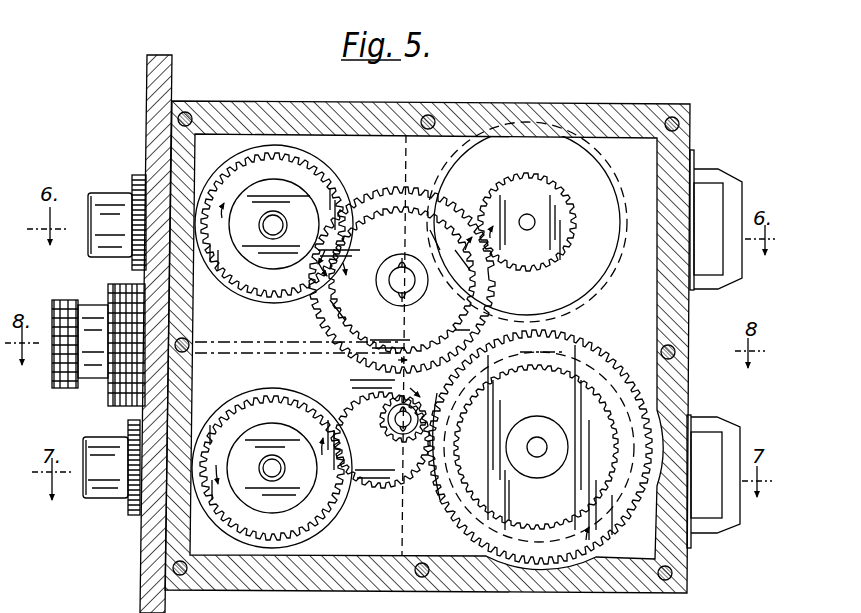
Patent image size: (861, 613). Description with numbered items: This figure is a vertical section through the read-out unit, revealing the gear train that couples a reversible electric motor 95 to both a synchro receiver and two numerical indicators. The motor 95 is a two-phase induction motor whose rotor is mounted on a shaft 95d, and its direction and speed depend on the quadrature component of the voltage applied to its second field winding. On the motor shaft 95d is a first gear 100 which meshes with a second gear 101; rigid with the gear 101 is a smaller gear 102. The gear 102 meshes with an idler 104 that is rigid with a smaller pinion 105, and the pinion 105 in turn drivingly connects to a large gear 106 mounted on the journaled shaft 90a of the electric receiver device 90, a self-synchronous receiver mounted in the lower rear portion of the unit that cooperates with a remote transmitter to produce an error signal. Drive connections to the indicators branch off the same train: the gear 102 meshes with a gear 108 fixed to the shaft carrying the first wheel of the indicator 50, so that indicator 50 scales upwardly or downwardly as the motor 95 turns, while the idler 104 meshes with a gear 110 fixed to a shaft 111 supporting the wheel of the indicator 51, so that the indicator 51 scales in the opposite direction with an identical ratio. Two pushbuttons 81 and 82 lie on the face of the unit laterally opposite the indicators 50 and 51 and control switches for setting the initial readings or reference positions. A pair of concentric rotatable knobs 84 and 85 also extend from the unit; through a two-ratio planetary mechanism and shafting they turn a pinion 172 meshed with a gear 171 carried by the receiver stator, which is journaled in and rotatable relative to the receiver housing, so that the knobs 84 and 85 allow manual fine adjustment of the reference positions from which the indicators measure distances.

The indicator 50 is at (247, 170).
The indicator 51 is at (239, 472).
The pushbutton 81 is at (113, 206).
The pushbutton 82 is at (101, 490).
The rotatable knob 84 is at (53, 386).
The rotatable knob 85 is at (108, 404).
The electric receiver device 90 is at (592, 538).
The journaled shaft 90a is at (537, 450).
The reversible electric motor 95 is at (602, 154).
The shaft 95d is at (527, 214).
The first gear 100 is at (528, 270).
The second gear 101 is at (492, 298).
The smaller gear 102 is at (317, 318).
The idler 104 is at (337, 382).
The pinion 105 is at (387, 437).
The large gear 106 is at (437, 501).
The gear 108 is at (340, 196).
The gear 110 is at (335, 503).
The shaft 111 is at (285, 468).
The gear 171 is at (532, 372).
The pinion 172 is at (463, 455).